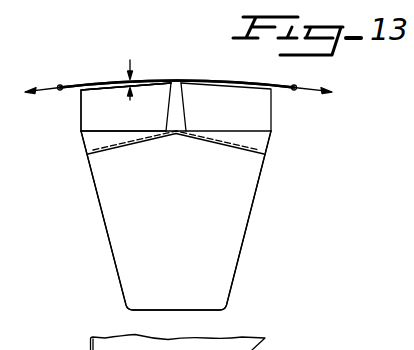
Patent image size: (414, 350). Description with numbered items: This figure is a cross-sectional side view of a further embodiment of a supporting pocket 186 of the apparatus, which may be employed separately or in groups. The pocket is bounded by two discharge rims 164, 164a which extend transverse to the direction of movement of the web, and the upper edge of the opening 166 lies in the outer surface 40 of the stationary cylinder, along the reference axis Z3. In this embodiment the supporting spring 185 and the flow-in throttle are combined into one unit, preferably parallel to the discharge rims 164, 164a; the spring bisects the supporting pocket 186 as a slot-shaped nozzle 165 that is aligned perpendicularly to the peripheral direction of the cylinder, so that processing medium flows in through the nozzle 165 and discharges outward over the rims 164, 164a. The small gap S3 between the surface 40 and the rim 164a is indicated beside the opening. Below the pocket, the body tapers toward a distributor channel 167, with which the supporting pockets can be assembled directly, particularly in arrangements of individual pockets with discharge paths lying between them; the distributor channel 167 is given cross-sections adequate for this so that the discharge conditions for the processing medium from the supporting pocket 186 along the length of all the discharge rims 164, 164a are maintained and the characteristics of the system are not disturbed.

The blade / cutting surface 40 is at (245, 82).
The opening 166 is at (183, 82).
The supporting pocket 186 is at (155, 95).
The supporting spring 185 is at (187, 108).
The discharge rim 164 is at (273, 107).
The discharge rim 164a is at (81, 113).
The slot-shaped nozzle 165 is at (180, 133).
The distributor channel 167 is at (234, 243).
The gap dimension S3 is at (131, 70).
The reference axis Z3 is at (182, 79).